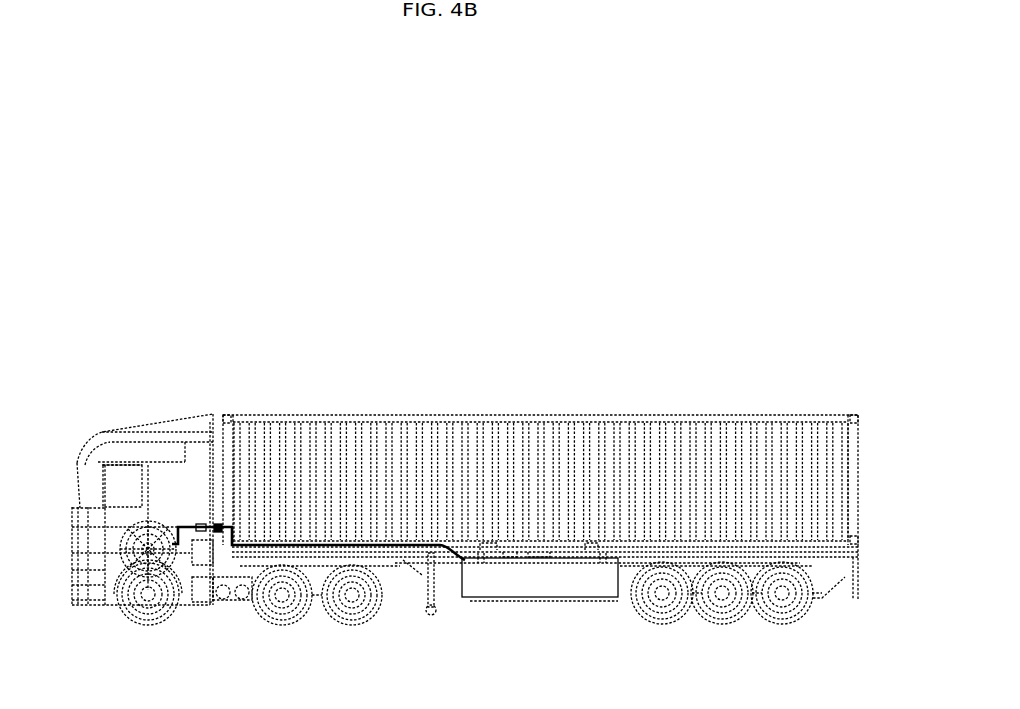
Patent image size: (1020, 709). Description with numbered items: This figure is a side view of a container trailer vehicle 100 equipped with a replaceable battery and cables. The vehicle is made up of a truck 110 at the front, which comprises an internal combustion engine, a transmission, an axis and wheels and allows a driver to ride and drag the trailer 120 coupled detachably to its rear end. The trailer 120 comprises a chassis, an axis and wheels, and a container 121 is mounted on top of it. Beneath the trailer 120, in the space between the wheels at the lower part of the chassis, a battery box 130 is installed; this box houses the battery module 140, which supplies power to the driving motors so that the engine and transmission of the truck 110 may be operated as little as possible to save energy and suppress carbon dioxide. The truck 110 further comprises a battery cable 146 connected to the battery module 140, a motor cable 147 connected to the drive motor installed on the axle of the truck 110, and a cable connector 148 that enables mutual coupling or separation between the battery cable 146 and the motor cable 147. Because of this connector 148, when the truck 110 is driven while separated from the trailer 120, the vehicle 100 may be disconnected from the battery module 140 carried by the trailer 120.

The container trailer vehicle 100 is at (519, 393).
The truck 110 is at (70, 521).
The trailer 120 is at (868, 548).
The container 121 is at (846, 464).
The battery box 130 is at (541, 604).
The battery module 140 is at (140, 522).
The battery cable 146 is at (252, 553).
The motor cable 147 is at (200, 521).
The cable connector 148 is at (223, 519).